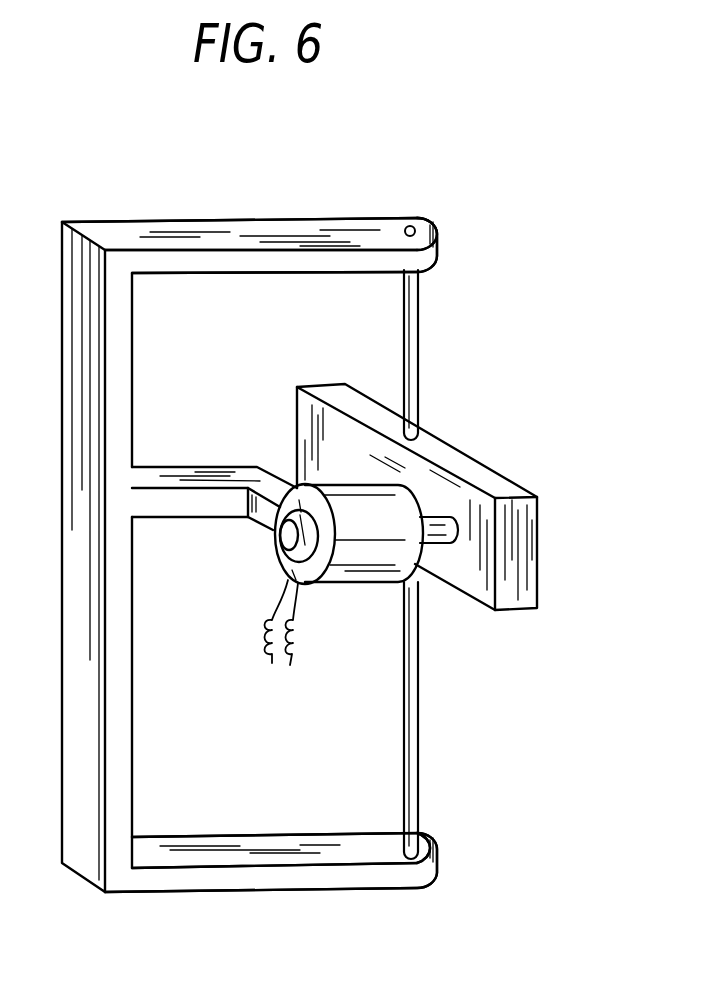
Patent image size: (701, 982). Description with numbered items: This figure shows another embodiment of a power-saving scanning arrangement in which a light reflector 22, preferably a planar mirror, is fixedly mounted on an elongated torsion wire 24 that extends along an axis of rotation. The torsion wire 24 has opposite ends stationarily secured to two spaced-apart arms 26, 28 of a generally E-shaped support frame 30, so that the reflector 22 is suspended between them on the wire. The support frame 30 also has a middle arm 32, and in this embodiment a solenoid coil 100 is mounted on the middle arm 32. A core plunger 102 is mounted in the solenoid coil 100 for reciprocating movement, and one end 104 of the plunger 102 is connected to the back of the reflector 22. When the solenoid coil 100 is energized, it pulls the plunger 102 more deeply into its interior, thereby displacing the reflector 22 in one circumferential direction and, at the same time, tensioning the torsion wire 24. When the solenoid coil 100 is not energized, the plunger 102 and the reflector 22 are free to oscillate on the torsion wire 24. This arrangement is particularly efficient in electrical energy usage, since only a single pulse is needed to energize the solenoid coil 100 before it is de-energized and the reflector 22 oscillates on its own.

The light reflector 22 is at (534, 526).
The torsion wire 24 is at (419, 338).
The arm 26 is at (292, 236).
The arm 28 is at (241, 860).
The support frame 30 is at (135, 602).
The middle arm 32 is at (205, 482).
The solenoid coil 100 is at (360, 581).
The core plunger 102 is at (448, 558).
The end of plunger 104 is at (441, 524).